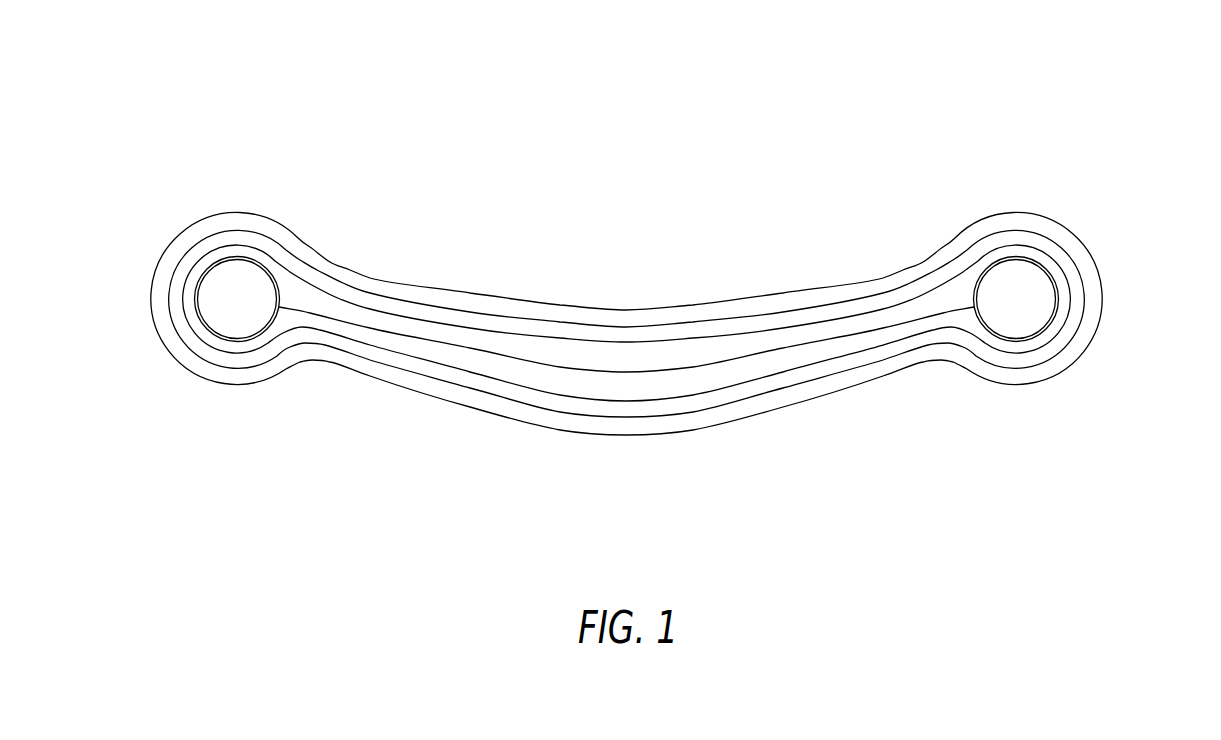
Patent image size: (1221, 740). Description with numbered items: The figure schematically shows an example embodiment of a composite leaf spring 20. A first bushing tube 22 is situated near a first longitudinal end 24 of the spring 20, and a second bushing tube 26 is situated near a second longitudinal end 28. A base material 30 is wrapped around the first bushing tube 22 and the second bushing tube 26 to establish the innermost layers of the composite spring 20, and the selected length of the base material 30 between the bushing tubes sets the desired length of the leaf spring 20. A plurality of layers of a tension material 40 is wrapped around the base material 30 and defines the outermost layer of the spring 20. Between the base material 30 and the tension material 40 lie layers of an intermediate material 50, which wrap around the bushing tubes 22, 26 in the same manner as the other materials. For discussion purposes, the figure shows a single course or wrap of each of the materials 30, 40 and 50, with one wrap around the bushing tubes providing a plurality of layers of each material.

The composite leaf spring 20 is at (248, 107).
The first bushing tube 22 is at (208, 323).
The first longitudinal end 24 is at (295, 397).
The second bushing tube 26 is at (1048, 323).
The second longitudinal end 28 is at (980, 397).
The base material 30 is at (465, 335).
The tension material 40 is at (347, 280).
The intermediate material 50 is at (395, 308).